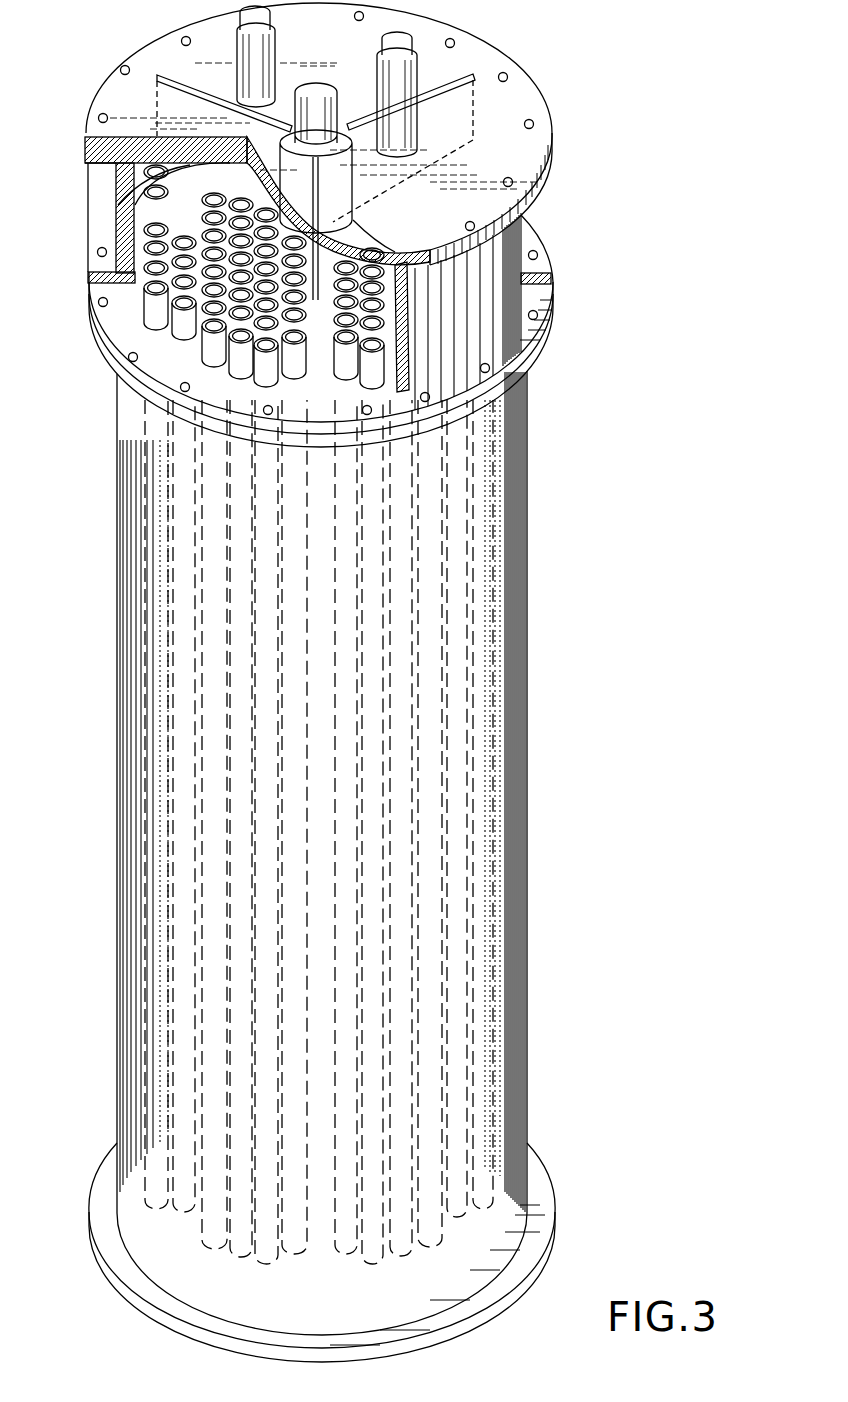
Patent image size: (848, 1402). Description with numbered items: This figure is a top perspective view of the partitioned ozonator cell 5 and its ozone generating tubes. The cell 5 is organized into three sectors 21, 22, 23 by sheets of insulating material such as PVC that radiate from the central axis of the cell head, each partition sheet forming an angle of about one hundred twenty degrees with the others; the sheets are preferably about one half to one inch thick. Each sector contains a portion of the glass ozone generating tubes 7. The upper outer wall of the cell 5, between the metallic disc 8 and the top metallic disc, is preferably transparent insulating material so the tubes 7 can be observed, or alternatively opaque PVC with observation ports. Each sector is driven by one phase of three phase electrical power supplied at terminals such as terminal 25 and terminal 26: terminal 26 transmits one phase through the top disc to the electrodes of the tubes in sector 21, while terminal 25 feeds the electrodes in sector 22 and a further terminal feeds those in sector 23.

The ozonator cell 5 is at (529, 690).
The glass ozone generating tubes 7 is at (258, 133).
The metallic disc 8 is at (567, 282).
The sector 21 is at (407, 334).
The sector 22 is at (188, 197).
The sector 23 is at (133, 306).
The terminal 25 is at (291, 35).
The terminal 26 is at (468, 42).